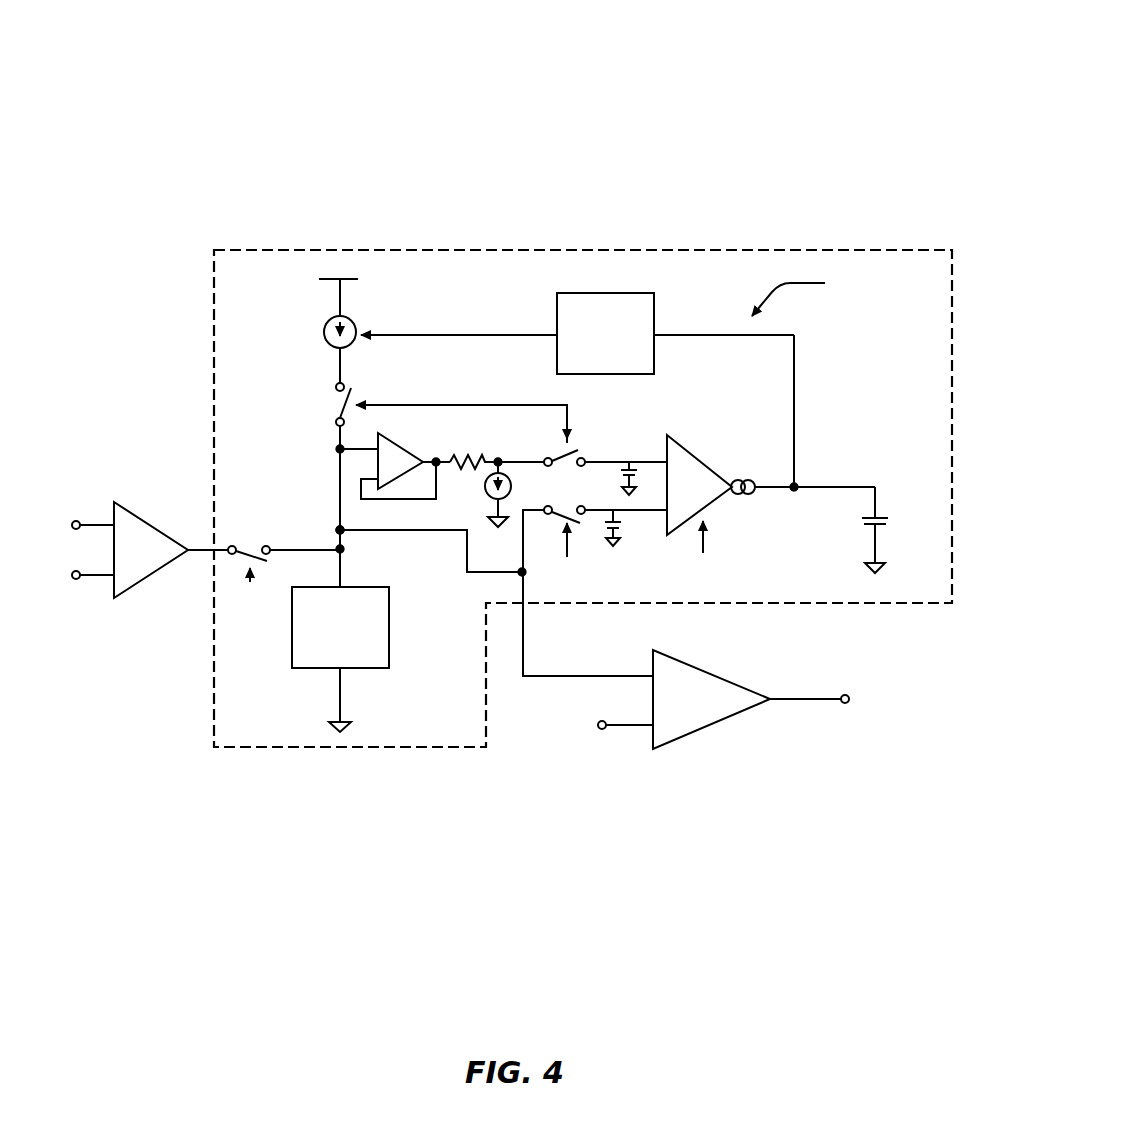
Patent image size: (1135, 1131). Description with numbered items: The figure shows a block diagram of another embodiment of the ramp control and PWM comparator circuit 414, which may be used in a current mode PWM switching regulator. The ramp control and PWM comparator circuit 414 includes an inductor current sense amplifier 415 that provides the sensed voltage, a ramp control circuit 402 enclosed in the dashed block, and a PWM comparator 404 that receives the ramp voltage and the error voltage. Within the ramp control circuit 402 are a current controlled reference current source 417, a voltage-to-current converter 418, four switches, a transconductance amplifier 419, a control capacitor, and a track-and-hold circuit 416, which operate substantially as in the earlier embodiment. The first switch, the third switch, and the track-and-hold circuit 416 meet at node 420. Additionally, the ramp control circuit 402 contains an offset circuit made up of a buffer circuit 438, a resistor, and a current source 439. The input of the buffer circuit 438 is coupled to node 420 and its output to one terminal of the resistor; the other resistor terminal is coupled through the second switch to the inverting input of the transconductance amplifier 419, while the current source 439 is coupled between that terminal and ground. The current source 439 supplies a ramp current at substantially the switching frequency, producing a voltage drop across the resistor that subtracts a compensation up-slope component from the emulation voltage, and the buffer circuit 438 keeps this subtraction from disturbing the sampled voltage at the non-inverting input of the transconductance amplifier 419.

The ramp control and PWM comparator circuit 414 is at (736, 66).
The ramp control circuit 402 is at (493, 746).
The inductor current sense amplifier 415 is at (130, 594).
The track-and-hold circuit 416 is at (310, 670).
The current controlled reference current source 417 is at (324, 342).
The voltage-to-current converter 418 is at (657, 358).
The transconductance amplifier 419 is at (727, 496).
The node 420 is at (337, 526).
The buffer circuit 438 is at (416, 450).
The current source 439 is at (485, 491).
The PWM comparator 404 is at (732, 727).